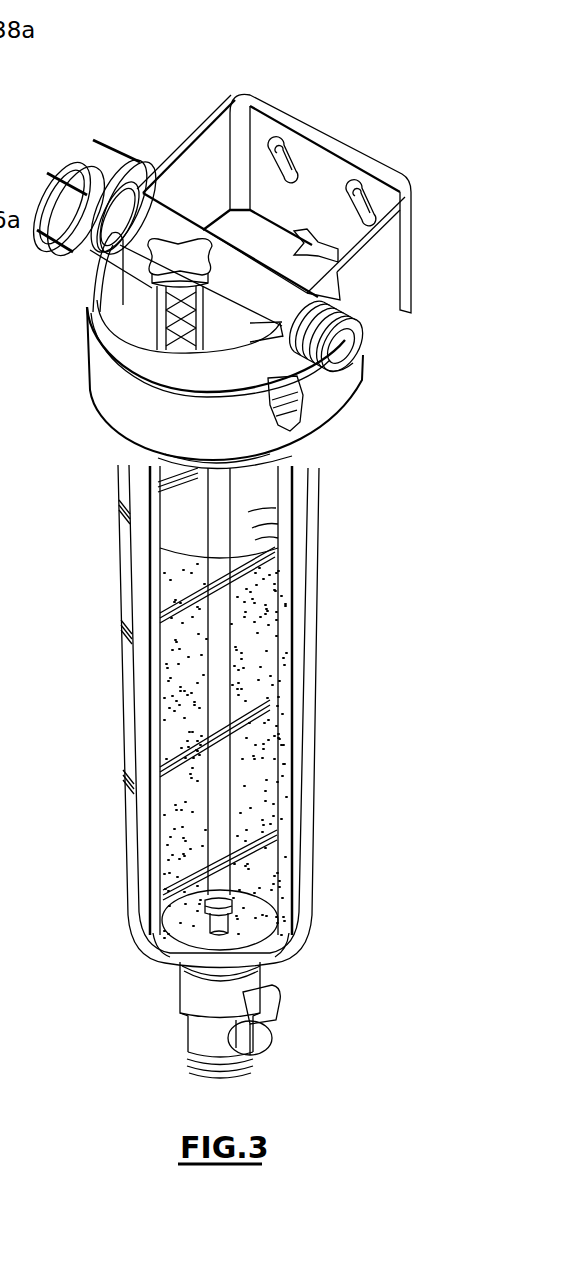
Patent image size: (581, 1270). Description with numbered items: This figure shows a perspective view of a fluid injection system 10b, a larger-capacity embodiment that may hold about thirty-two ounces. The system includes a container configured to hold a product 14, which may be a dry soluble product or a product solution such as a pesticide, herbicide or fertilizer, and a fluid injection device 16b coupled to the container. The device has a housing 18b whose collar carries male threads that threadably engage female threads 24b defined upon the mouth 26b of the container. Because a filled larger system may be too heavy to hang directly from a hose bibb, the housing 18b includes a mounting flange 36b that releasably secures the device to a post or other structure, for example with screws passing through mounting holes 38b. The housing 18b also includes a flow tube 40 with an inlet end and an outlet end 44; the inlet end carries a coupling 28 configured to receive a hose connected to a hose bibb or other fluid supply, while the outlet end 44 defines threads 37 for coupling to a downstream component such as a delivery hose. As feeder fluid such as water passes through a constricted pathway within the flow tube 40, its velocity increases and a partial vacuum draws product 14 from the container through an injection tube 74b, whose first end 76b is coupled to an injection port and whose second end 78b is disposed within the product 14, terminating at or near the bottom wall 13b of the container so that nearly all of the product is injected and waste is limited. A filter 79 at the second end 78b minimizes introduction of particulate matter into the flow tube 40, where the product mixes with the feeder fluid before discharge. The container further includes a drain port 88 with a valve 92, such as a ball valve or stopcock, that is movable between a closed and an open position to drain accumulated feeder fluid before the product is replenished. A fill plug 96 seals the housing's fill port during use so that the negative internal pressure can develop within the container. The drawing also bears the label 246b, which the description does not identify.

The fluid injection system 10b is at (414, 93).
The bottom wall 13b is at (247, 908).
The product 14 is at (218, 730).
The fluid injection device 16b is at (308, 219).
The housing 18b is at (88, 325).
The female threads 24b is at (221, 350).
The mouth 26b is at (181, 314).
The coupling 28 is at (80, 153).
The mounting flange 36b is at (308, 183).
The threads 37 is at (348, 306).
The mounting holes 38b is at (272, 143).
The flow tube 40 is at (170, 226).
The outlet end 44 is at (353, 363).
The injection tube 74b is at (213, 672).
The first end 76b is at (217, 453).
The second end 78b is at (218, 905).
The filter 79 is at (207, 912).
The drain port 88 is at (272, 965).
The valve 92 is at (207, 1033).
The fill plug 96 is at (215, 241).
The housing sleeve 246b is at (318, 578).